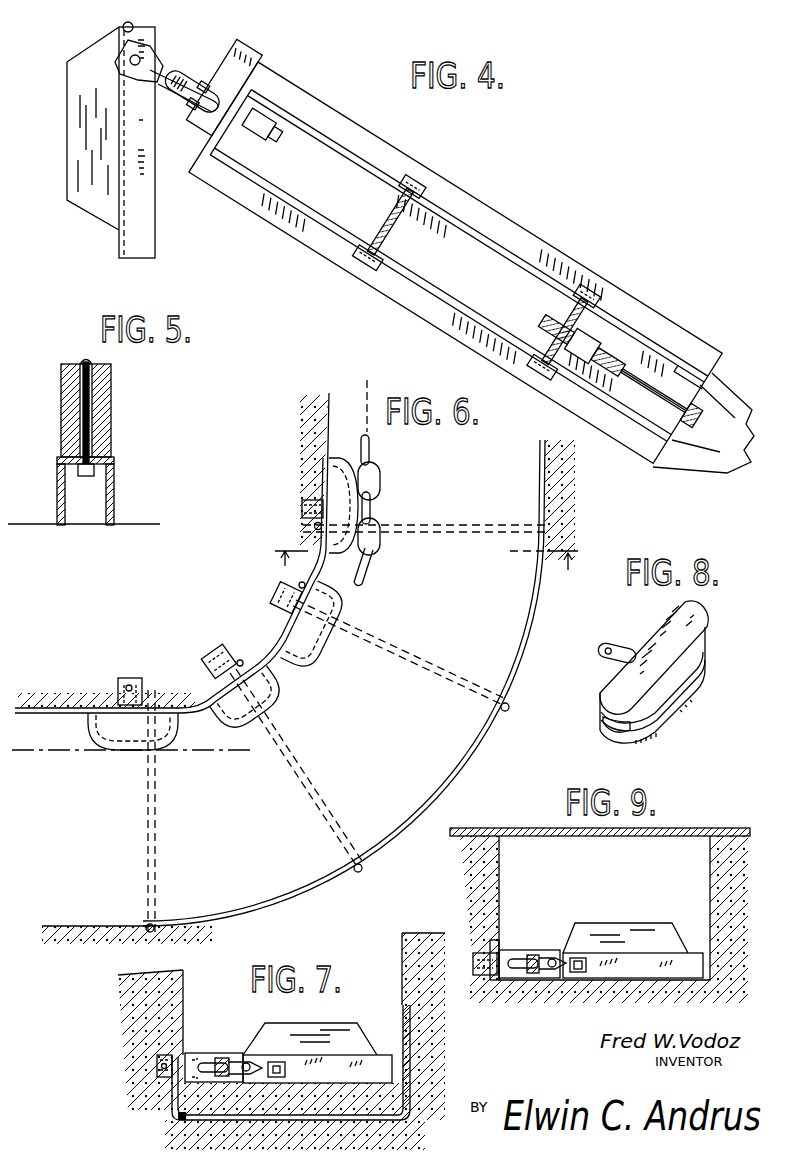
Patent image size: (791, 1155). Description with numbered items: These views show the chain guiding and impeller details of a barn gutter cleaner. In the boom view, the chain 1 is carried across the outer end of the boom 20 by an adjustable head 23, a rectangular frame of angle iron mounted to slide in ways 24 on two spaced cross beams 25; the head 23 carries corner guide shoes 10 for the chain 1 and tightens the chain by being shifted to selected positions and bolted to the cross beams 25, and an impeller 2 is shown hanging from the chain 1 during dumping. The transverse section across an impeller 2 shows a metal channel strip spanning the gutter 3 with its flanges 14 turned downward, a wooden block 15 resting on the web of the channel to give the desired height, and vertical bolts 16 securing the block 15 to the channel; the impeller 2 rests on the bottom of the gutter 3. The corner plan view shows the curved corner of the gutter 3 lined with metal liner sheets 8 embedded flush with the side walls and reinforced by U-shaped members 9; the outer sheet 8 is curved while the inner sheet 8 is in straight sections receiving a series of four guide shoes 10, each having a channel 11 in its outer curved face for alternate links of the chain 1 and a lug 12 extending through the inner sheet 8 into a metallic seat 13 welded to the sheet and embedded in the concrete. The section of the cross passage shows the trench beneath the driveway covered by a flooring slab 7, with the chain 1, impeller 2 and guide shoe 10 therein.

In FIG. 4, the chain 1 is at (194, 80).
In FIG. 6, the chain 1 is at (382, 483).
In FIG. 7, the chain 1 is at (237, 1057).
In FIG. 9, the chain 1 is at (544, 952).
In FIG. 4, the impeller 2 is at (164, 233).
In FIG. 5, the impeller 2 is at (123, 445).
In FIG. 7, the impeller 2 is at (357, 1022).
In FIG. 9, the impeller 2 is at (622, 913).
In FIG. 6, the gutter 3 is at (110, 916).
In FIG. 7, the gutter 3 is at (394, 947).
In FIG. 9, the gutter 3 is at (702, 852).
In FIG. 6, the flooring slab 7 is at (424, 548).
In FIG. 9, the flooring slab 7 is at (556, 840).
In FIG. 6, the metal liner sheet 8 is at (292, 672).
In FIG. 7, the metal liner sheet 8 is at (172, 1055).
In FIG. 6, the reinforcing U-shaped member 9 is at (473, 532).
In FIG. 7, the reinforcing U-shaped member 9 is at (175, 1117).
In FIG. 4, the guide shoe 10 is at (216, 86).
In FIG. 6, the guide shoe 10 is at (336, 458).
In FIG. 8, the guide shoe 10 is at (702, 622).
In FIG. 7, the guide shoe 10 is at (201, 1044).
In FIG. 9, the guide shoe 10 is at (515, 942).
In FIG. 8, the channel 11 is at (680, 693).
In FIG. 6, the lug 12 is at (275, 590).
In FIG. 8, the lug 12 is at (623, 635).
In FIG. 7, the lug 12 is at (152, 1064).
In FIG. 6, the metallic seat 13 is at (292, 507).
In FIG. 7, the metallic seat 13 is at (160, 1078).
In FIG. 9, the metallic seat 13 is at (480, 976).
In FIG. 5, the flanges 14 is at (57, 492).
In FIG. 5, the wooden block 15 is at (112, 390).
In FIG. 5, the vertical bolt 16 is at (92, 418).
In FIG. 4, the boom 20 is at (705, 452).
In FIG. 4, the adjustable head 23 is at (456, 263).
In FIG. 4, the ways 24 is at (420, 186).
In FIG. 4, the cross beams 25 is at (378, 212).